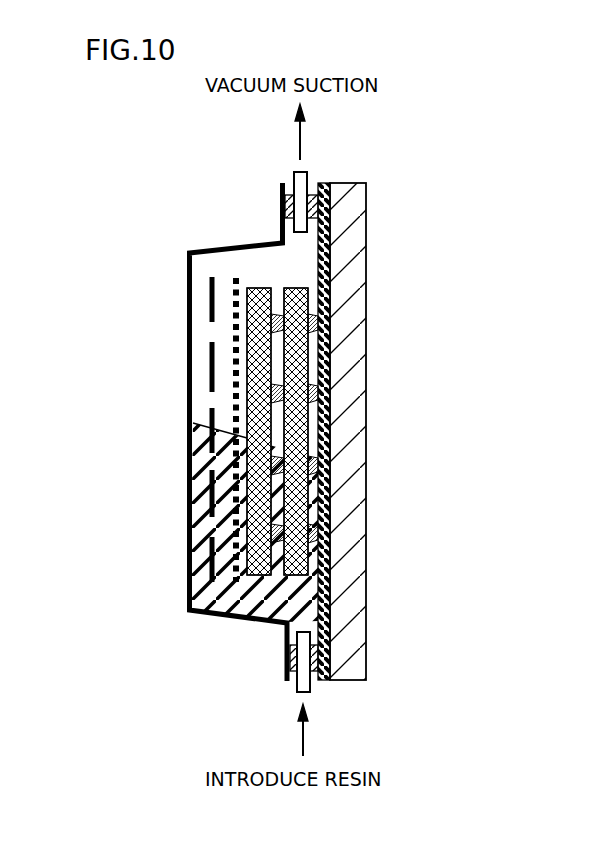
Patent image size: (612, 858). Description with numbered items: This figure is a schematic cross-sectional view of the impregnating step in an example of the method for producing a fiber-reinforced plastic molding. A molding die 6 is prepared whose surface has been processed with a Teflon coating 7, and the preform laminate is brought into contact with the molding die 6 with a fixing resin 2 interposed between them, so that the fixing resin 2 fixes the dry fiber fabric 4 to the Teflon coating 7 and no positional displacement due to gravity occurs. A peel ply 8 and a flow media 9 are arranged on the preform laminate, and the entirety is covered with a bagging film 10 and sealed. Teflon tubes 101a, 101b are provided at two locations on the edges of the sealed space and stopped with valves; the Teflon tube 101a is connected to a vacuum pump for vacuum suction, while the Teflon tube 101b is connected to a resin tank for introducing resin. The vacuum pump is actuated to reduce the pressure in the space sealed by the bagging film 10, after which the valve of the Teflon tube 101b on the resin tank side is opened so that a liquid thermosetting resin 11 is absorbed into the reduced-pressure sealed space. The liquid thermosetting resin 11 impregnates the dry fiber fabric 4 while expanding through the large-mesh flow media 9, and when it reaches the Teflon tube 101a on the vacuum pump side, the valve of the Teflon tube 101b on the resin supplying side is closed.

The fixing resin 2 is at (277, 312).
The dry fiber fabric 4 is at (300, 358).
The molding die 6 is at (355, 430).
The Teflon coating 7 is at (321, 190).
The peel ply 8 is at (236, 278).
The flow media 9 is at (211, 275).
The bagging film 10 is at (188, 363).
The liquid thermosetting resin 11 is at (212, 594).
The Teflon tube 101a is at (297, 188).
The Teflon tube 101b is at (299, 682).